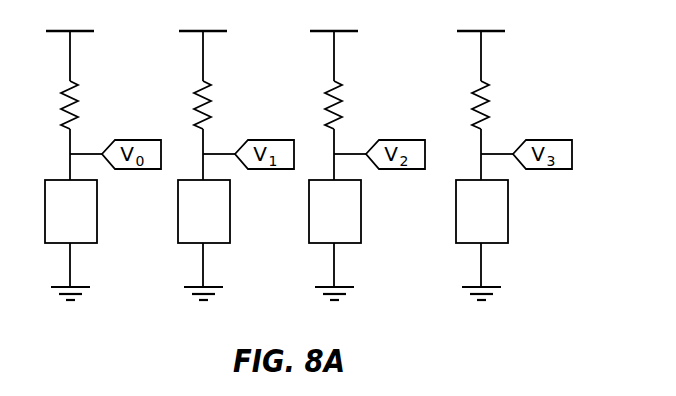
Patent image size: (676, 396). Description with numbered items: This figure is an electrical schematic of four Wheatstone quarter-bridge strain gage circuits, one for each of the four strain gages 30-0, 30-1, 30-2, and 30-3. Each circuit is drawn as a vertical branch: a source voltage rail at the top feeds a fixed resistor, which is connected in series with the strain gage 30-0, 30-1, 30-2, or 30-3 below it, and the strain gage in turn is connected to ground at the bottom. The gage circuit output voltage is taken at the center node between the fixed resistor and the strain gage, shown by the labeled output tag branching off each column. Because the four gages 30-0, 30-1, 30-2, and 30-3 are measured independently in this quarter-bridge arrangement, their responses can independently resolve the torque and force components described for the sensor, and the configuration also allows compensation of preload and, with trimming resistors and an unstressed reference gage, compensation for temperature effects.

The strain gage 30-0 is at (71, 211).
The strain gage 30-1 is at (204, 211).
The strain gage 30-2 is at (335, 211).
The strain gage 30-3 is at (482, 211).